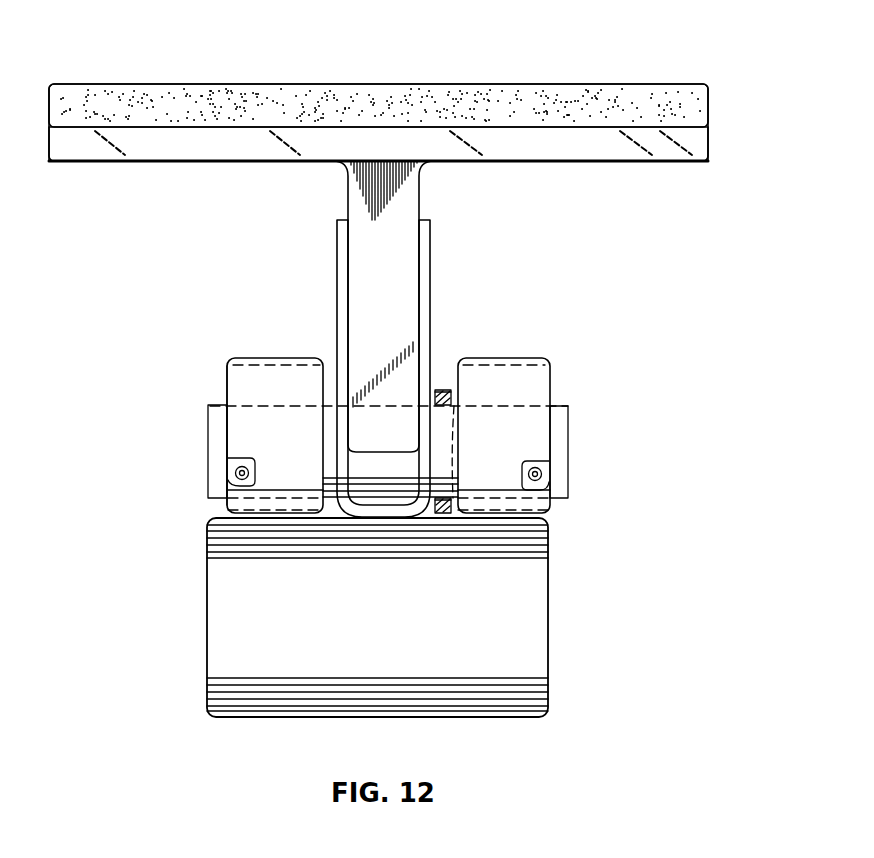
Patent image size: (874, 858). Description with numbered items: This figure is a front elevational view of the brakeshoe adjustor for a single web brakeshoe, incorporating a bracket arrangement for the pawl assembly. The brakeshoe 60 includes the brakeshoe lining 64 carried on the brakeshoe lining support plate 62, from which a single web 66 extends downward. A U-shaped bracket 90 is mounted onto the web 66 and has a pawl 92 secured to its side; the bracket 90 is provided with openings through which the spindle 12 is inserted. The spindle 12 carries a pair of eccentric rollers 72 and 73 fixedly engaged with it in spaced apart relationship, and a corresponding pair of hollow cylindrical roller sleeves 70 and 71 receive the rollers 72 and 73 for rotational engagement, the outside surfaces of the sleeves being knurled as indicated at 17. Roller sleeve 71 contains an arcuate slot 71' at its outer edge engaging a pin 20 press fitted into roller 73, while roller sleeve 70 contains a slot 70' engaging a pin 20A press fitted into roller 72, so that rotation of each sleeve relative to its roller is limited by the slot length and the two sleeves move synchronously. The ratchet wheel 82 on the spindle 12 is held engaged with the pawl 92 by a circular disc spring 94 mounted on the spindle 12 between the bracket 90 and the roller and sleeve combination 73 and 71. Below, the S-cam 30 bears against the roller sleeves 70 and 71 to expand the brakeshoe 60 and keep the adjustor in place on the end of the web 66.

The brakeshoe 60 is at (384, 67).
The brakeshoe lining support plate 62 is at (690, 152).
The brakeshoe lining 64 is at (278, 93).
The single web 66 is at (355, 190).
The U-shaped bracket 90 is at (342, 256).
The pawl 92 is at (437, 390).
The ratchet wheel 82 is at (443, 390).
The disc spring 94 is at (451, 396).
The knurled surface 17 is at (303, 370).
The roller sleeve 70 is at (208, 409).
The slot 70' is at (209, 520).
The roller sleeve 71 is at (521, 409).
The slot 71' is at (574, 454).
The eccentric roller 72 is at (262, 365).
The eccentric roller 73 is at (515, 368).
The spindle 12 is at (218, 438).
The pin 20 is at (527, 470).
The pin 20A is at (236, 473).
The S-cam 30 is at (215, 588).